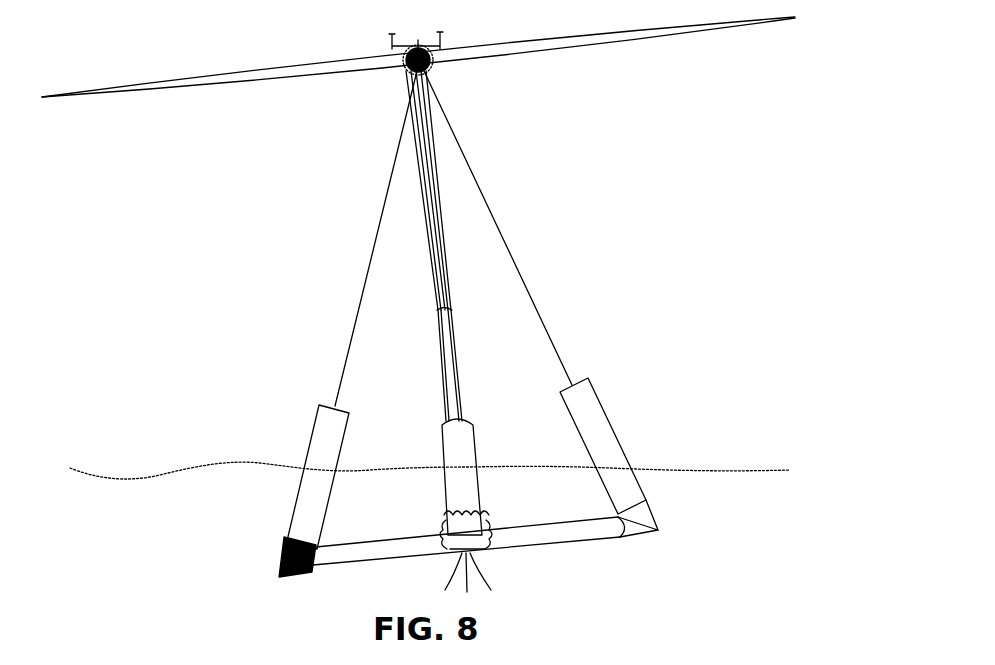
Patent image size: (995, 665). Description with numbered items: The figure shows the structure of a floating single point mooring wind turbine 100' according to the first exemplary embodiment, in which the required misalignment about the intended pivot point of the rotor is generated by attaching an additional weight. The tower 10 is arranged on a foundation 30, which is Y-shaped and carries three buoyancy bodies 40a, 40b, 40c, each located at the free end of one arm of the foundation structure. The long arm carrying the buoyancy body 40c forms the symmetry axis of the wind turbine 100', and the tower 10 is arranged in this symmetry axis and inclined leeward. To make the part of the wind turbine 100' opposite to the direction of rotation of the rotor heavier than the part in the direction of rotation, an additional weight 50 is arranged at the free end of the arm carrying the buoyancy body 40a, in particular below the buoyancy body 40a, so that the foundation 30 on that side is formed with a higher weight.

The single point mooring wind turbine 100' is at (418, 329).
The tower 10 is at (430, 173).
The foundation 30 is at (352, 568).
The buoyancy body 40a is at (315, 476).
The buoyancy body 40b is at (602, 437).
The buoyancy body 40c is at (475, 485).
The additional weight 50 is at (280, 550).